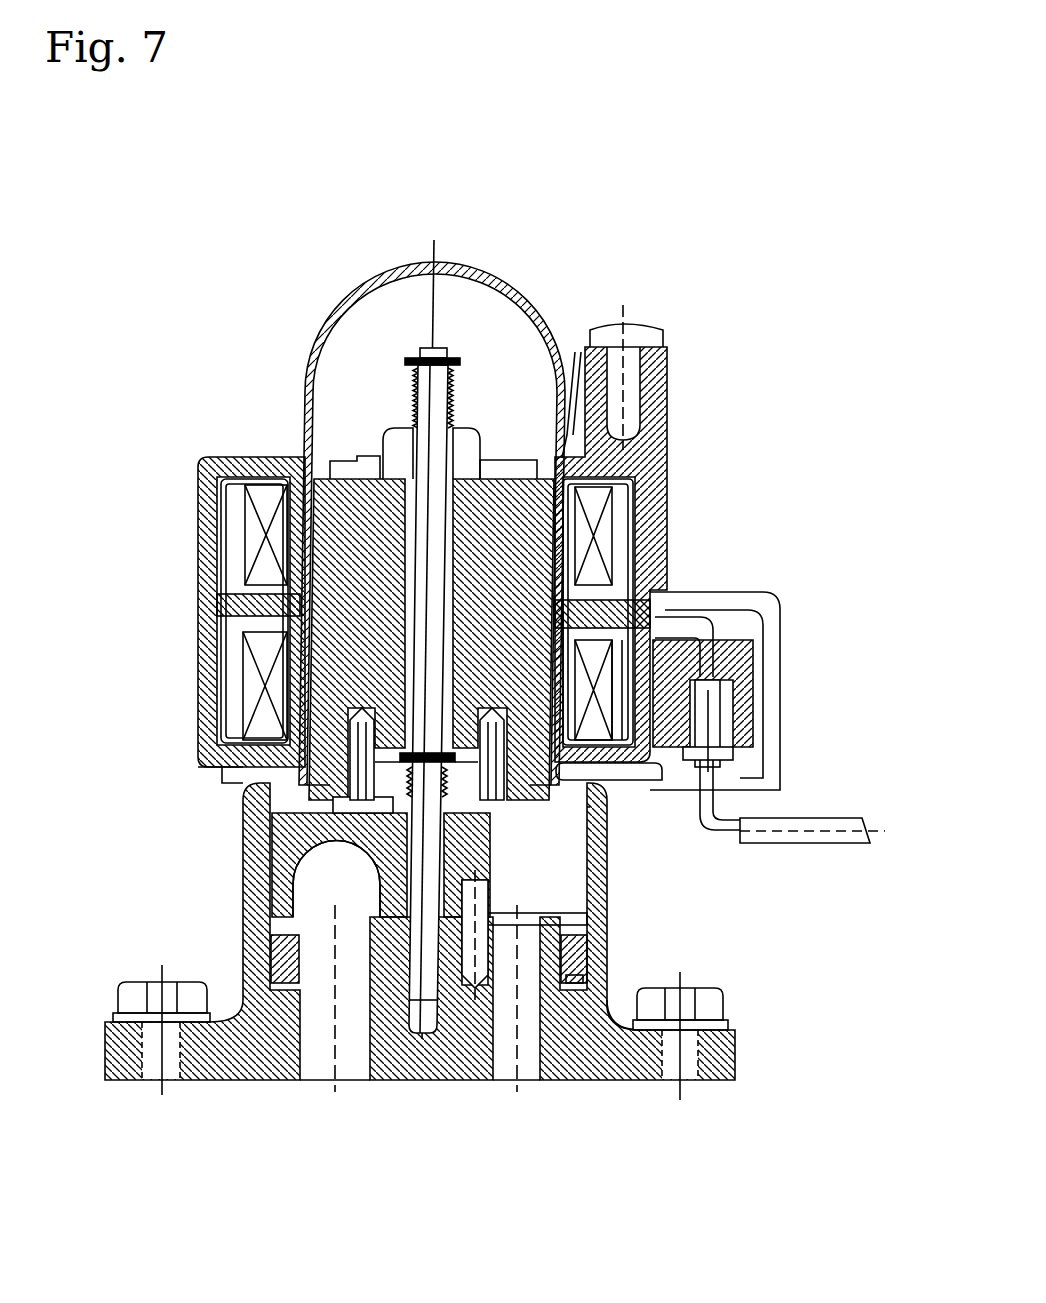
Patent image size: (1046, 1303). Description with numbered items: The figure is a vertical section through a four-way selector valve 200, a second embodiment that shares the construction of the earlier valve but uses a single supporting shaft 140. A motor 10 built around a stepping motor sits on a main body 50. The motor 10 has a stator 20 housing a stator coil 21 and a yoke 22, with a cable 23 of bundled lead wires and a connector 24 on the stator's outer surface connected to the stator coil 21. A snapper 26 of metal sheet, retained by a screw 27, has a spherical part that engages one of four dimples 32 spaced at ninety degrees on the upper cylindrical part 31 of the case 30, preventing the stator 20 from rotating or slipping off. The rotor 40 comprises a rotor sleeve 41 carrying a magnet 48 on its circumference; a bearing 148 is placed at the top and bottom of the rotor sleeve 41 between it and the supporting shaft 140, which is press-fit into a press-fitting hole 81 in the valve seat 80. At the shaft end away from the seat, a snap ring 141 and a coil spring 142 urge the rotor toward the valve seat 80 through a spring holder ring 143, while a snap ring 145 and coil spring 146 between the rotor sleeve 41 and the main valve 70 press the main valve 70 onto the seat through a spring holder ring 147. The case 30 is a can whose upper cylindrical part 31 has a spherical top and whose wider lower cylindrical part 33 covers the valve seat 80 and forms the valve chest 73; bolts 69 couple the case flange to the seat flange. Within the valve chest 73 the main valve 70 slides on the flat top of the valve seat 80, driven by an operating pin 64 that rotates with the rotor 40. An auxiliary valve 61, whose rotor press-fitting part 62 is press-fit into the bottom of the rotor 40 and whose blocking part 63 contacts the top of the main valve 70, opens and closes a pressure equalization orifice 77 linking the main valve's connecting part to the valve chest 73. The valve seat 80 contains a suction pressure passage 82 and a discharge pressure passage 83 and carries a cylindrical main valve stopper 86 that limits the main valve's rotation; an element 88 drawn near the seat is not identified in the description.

The four-way selector valve 200 is at (479, 599).
The upper cylindrical part 31 is at (382, 268).
The dimples 32 is at (305, 400).
The stator 20 is at (350, 529).
The stator coil 21 is at (250, 540).
The yoke 22 is at (245, 462).
The magnet 48 is at (262, 580).
The bearing 148 is at (400, 450).
The rotor 40 is at (645, 508).
The screw 27 is at (648, 345).
The snapper 26 is at (568, 440).
The motor 10 is at (767, 672).
The connector 24 is at (738, 602).
The cable 23 is at (724, 815).
The rotor sleeve 41 is at (500, 500).
The coil spring 142 is at (458, 420).
The spring holder ring 143 is at (405, 428).
The snap ring 141 is at (455, 362).
The press-fitting hole 81 is at (424, 1036).
The snap ring 145 is at (455, 790).
The coil spring 146 is at (460, 800).
The spring holder ring 147 is at (465, 810).
The rotor press-fitting part 62 is at (368, 718).
The case 30 is at (397, 956).
The main valve 70 is at (245, 862).
The auxiliary valve 61 is at (238, 775).
The operating pin 64 is at (478, 862).
The pressure equalization orifice 77 is at (296, 893).
The blocking part 63 is at (333, 805).
The supporting shaft 140 is at (478, 1078).
The main valve stopper 86 is at (585, 938).
The O-ring 88 is at (585, 968).
The valve chest 73 is at (655, 979).
The valve seat 80 is at (456, 1031).
The suction pressure passage 82 is at (318, 1082).
The discharge pressure passage 83 is at (528, 1082).
The lower cylindrical part 33 is at (240, 965).
The bolts 69 is at (715, 1002).
The main body 50 is at (590, 848).